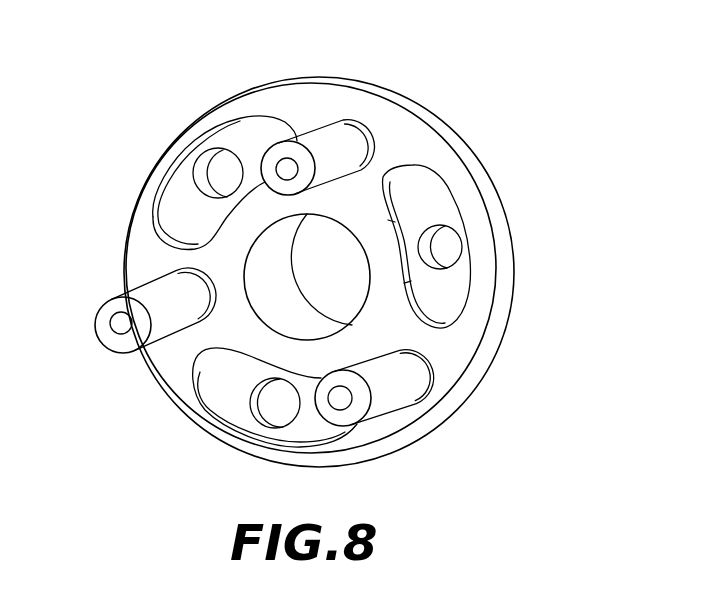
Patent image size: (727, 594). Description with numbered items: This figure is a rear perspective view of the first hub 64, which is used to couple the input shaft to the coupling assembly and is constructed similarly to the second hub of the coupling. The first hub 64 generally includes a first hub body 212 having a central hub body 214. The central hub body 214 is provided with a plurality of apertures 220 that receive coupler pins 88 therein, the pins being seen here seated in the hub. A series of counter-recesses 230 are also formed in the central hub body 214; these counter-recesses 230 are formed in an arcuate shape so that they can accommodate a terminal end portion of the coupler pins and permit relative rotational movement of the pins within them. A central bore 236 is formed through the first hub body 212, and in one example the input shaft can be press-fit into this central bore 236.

The first hub 64 is at (341, 267).
The coupler pins 88 is at (295, 267).
The first hub body 212 is at (493, 235).
The central hub body 214 is at (503, 293).
The apertures 220 is at (370, 140).
The counter-recesses 230 is at (197, 210).
The central bore 236 is at (270, 285).